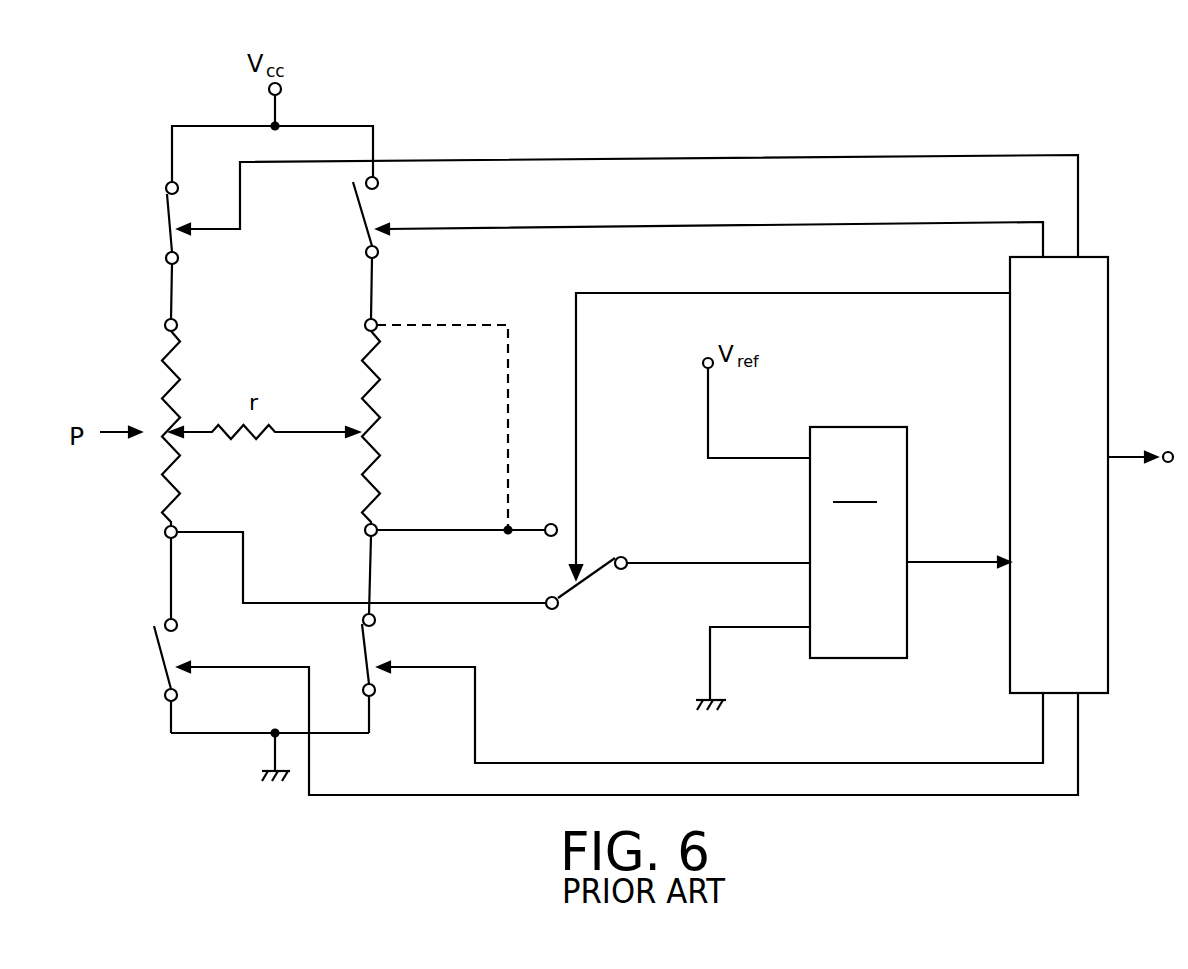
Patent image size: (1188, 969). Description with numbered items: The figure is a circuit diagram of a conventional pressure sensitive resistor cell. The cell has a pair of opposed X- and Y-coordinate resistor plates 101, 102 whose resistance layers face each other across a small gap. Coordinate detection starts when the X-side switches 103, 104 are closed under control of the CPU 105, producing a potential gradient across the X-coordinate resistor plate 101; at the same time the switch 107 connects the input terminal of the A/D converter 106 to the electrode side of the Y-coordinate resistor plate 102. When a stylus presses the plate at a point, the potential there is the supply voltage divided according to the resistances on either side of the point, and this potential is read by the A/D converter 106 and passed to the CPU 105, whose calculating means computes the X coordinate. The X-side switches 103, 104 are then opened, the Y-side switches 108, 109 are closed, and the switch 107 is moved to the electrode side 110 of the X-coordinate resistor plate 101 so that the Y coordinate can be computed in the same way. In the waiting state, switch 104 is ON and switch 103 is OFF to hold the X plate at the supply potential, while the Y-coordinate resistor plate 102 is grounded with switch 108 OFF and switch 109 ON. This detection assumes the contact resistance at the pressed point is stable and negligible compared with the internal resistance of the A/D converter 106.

The X-coordinate resistor plate 101 is at (160, 448).
The Y-coordinate resistor plate 102 is at (358, 372).
The X-side switch 103 is at (167, 215).
The X-side switch 104 is at (158, 658).
The CPU 105 is at (1087, 489).
The A/D converter 106 is at (888, 580).
The switch 107 is at (590, 575).
The Y-side switch 108 is at (362, 207).
The Y-side switch 109 is at (372, 645).
The electrode side 110 is at (164, 535).